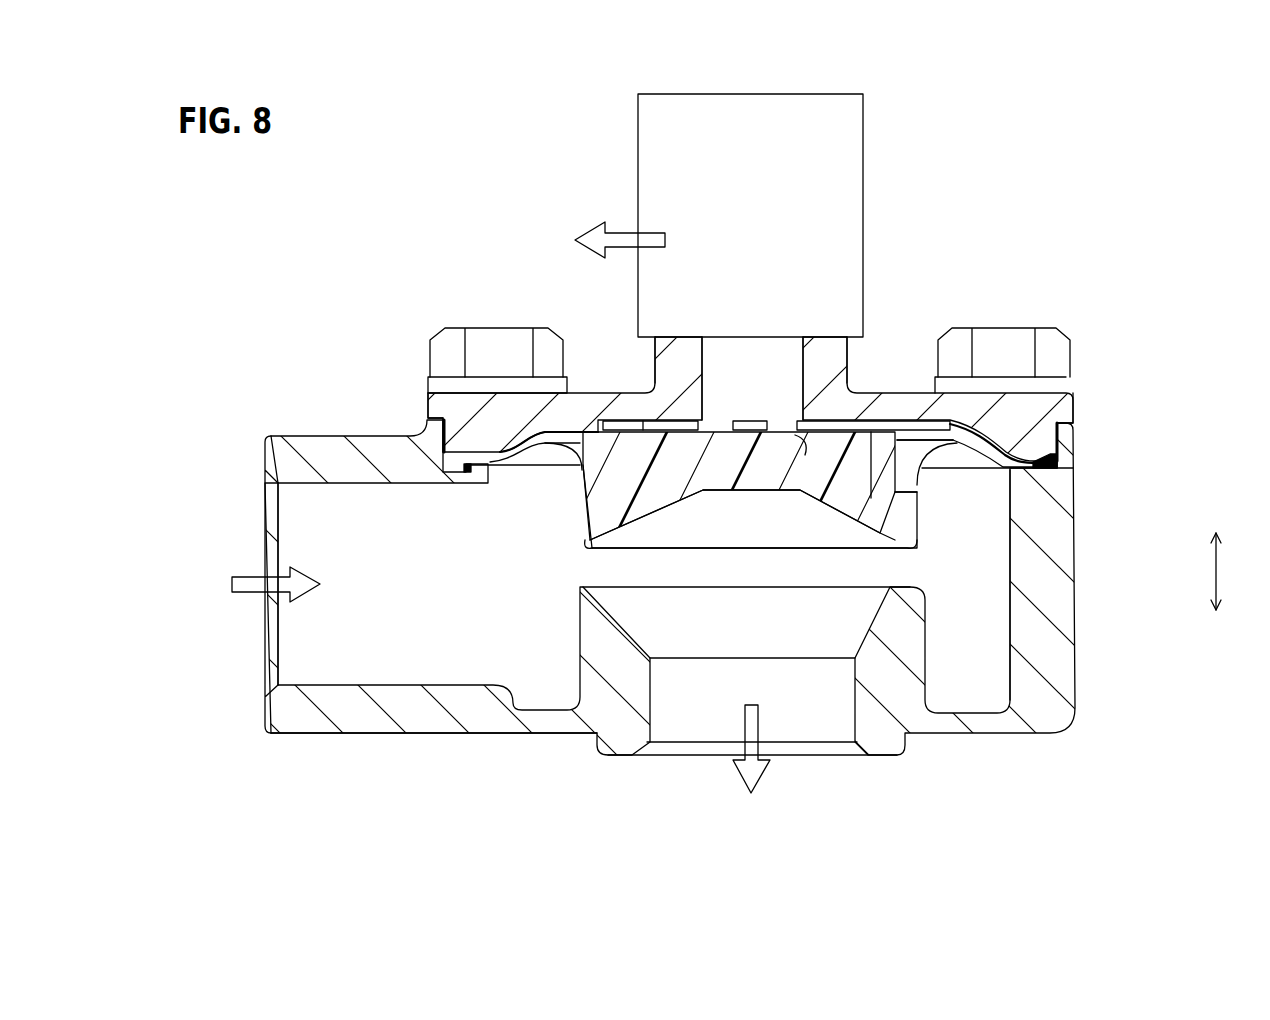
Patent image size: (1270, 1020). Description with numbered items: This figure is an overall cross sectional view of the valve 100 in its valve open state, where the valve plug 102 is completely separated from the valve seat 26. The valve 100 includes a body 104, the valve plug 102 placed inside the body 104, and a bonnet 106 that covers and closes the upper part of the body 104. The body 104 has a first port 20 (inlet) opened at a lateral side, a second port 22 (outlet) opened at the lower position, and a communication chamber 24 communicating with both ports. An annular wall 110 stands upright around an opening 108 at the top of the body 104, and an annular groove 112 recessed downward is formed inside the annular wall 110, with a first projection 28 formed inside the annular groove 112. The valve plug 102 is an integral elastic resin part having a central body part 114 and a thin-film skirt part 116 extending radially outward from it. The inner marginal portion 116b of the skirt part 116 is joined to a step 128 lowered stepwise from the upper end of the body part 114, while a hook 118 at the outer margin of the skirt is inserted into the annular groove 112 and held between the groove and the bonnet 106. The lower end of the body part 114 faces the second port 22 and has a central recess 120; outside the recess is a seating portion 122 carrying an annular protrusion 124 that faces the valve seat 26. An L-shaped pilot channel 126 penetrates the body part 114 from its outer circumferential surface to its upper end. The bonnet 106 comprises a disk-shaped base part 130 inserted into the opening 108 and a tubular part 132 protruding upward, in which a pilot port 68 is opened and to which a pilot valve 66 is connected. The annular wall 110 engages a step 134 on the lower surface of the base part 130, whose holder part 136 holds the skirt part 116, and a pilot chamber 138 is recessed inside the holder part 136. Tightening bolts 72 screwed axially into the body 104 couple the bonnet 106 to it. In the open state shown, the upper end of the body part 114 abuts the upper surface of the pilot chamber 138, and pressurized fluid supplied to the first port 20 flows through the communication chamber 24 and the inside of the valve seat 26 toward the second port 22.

The valve 100 is at (339, 190).
The valve plug 102 is at (785, 496).
The body 104 is at (569, 746).
The bonnet 106 is at (880, 356).
The opening 108 is at (453, 422).
The annular wall 110 is at (1068, 438).
The annular groove 112 is at (1060, 472).
The body part 114 is at (716, 442).
The skirt part 116 is at (992, 449).
The inner marginal portion 116b is at (926, 450).
The hook 118 is at (1050, 458).
The recess 120 is at (742, 493).
The seating portion 122 is at (922, 548).
The protrusion 124 is at (590, 548).
The pilot channel 126 is at (905, 496).
The step 128 is at (576, 450).
The base part 130 is at (608, 420).
The tubular part 132 is at (678, 352).
The step 134 is at (1068, 424).
The holder part 136 is at (469, 470).
The pilot chamber 138 is at (808, 445).
The first port 20 is at (297, 639).
The second port 22 is at (806, 726).
The communication chamber 24 is at (982, 650).
The valve seat 26 is at (912, 583).
The first projection 28 is at (1020, 470).
The pilot valve 66 is at (882, 158).
The pilot port 68 is at (750, 354).
The tightening bolts 72 is at (497, 342).